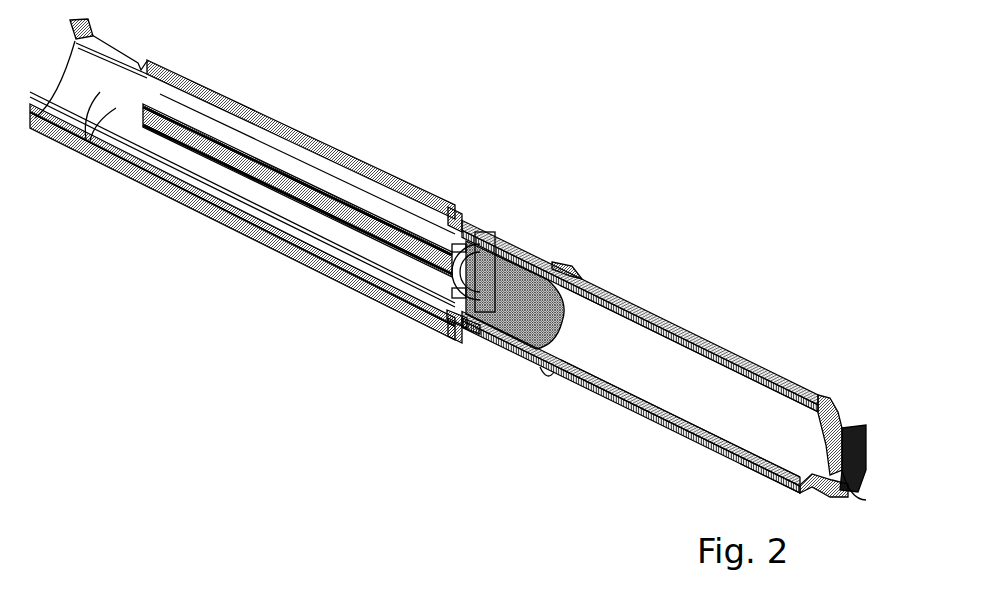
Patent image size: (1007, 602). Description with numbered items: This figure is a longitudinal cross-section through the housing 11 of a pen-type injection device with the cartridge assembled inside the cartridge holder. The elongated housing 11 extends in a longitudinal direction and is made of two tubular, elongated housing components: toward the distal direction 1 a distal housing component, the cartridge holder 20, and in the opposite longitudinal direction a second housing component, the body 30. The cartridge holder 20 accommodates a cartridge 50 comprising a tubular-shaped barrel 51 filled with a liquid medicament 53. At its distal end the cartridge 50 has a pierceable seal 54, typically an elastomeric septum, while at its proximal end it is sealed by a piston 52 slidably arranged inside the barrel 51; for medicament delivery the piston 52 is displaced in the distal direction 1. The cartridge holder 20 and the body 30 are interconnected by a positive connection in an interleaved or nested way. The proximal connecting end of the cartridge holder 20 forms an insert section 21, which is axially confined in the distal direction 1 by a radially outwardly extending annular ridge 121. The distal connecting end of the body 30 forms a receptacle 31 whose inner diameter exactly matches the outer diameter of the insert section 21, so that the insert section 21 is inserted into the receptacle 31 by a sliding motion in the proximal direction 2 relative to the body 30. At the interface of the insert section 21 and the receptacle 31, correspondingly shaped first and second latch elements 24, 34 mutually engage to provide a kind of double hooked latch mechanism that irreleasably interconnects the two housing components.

The distal direction 1 is at (642, 135).
The proximal direction 2 is at (567, 88).
The housing 11 is at (400, 366).
The cartridge holder 20 is at (612, 398).
The insert section 21 is at (560, 262).
The first latch element 24 is at (457, 320).
The body 30 is at (330, 270).
The receptacle 31 is at (548, 262).
The second latch element 34 is at (467, 325).
The cartridge 50 is at (632, 345).
The barrel 51 is at (720, 377).
The piston 52 is at (537, 300).
The liquid medicament 53 is at (780, 410).
The pierceable seal 54 is at (850, 427).
The annular ridge 121 is at (543, 372).